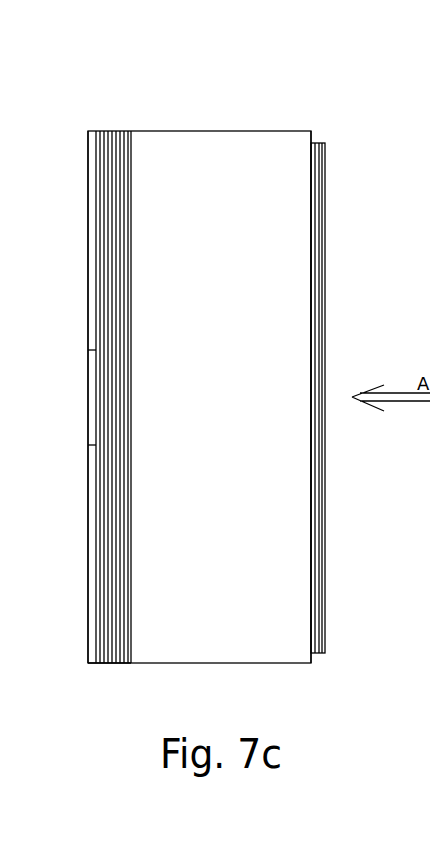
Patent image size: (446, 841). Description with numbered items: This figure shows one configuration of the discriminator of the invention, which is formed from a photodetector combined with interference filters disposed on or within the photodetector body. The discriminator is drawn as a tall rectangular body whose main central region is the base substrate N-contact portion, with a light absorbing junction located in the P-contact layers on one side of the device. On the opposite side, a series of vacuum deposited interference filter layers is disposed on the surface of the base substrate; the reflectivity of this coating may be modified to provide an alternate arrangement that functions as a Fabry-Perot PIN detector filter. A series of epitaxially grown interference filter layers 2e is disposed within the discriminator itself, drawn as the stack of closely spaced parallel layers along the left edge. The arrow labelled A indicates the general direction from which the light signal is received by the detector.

The epitaxially grown interference filter layers 2e is at (107, 664).